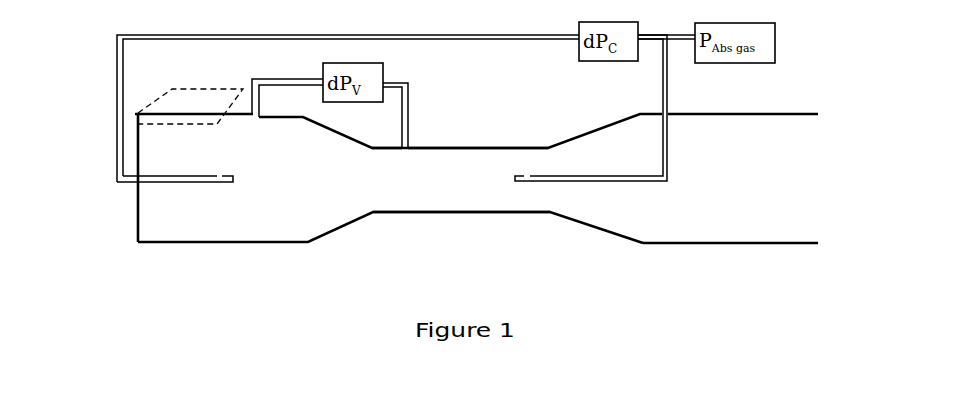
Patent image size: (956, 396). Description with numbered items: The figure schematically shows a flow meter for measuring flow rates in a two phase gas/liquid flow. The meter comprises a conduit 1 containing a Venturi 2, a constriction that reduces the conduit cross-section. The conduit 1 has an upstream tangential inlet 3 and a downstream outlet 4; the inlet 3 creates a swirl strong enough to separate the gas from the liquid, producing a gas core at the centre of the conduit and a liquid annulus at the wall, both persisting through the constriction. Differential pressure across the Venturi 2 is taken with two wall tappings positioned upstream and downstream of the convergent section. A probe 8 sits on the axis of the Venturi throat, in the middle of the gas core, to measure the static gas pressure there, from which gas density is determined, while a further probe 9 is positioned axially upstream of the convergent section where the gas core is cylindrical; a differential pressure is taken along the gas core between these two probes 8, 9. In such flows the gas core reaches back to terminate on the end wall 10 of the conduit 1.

The conduit 1 is at (253, 249).
The Venturi 2 is at (453, 216).
The upstream tangential inlet 3 is at (172, 99).
The downstream outlet 4 is at (800, 180).
The probe 8 is at (537, 181).
The further probe 9 is at (193, 181).
The end wall 10 is at (138, 232).